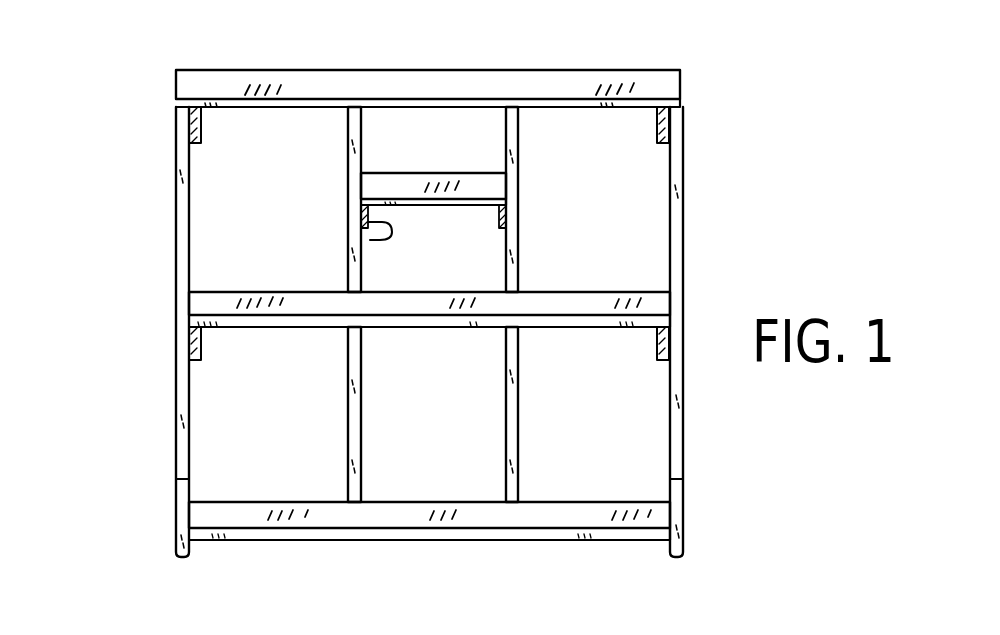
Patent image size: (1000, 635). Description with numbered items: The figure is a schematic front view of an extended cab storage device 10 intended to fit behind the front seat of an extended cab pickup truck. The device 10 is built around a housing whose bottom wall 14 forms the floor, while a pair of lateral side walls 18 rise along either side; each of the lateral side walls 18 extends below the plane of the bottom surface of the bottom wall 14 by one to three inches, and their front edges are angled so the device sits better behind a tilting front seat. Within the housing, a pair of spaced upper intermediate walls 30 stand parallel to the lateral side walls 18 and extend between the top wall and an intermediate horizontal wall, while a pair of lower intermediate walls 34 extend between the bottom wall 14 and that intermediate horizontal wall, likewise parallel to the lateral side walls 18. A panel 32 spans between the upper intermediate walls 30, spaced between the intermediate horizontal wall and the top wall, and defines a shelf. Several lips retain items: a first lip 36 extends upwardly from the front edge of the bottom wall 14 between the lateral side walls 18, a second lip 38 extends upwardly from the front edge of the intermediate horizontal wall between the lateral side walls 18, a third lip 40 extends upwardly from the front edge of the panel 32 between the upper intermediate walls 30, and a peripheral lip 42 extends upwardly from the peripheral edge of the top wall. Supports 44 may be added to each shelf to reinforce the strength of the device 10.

The extended cab storage device 10 is at (157, 421).
The bottom wall 14 is at (562, 542).
The lateral side walls 18 is at (176, 250).
The upper intermediate walls 30 is at (348, 128).
The panel 32 is at (408, 207).
The lower intermediate walls 34 is at (348, 360).
The first lip 36 is at (633, 502).
The second lip 38 is at (642, 292).
The third lip 40 is at (472, 177).
The peripheral lip 42 is at (645, 77).
The supports 44 is at (497, 225).